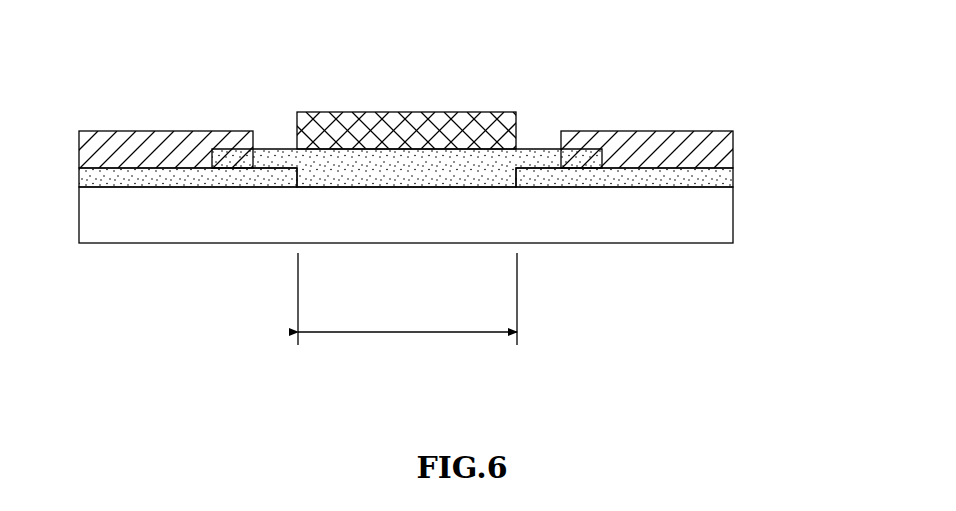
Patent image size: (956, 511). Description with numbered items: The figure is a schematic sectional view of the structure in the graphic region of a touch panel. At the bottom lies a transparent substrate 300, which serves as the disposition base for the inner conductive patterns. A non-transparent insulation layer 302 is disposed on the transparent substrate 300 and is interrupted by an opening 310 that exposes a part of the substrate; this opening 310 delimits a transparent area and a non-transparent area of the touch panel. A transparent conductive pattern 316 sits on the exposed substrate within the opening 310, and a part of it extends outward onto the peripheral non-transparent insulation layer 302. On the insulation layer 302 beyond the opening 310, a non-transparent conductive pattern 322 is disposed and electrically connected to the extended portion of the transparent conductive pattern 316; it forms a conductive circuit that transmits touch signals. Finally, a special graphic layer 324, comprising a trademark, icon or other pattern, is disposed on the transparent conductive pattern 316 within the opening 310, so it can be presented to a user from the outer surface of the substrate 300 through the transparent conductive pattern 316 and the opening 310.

The transparent substrate 300 is at (720, 218).
The non-transparent insulation layer 302 is at (720, 178).
The transparent conductive pattern 316 is at (491, 150).
The non-transparent conductive pattern 322 is at (727, 143).
The special graphic layer 324 is at (397, 133).
The opening 310 is at (407, 299).